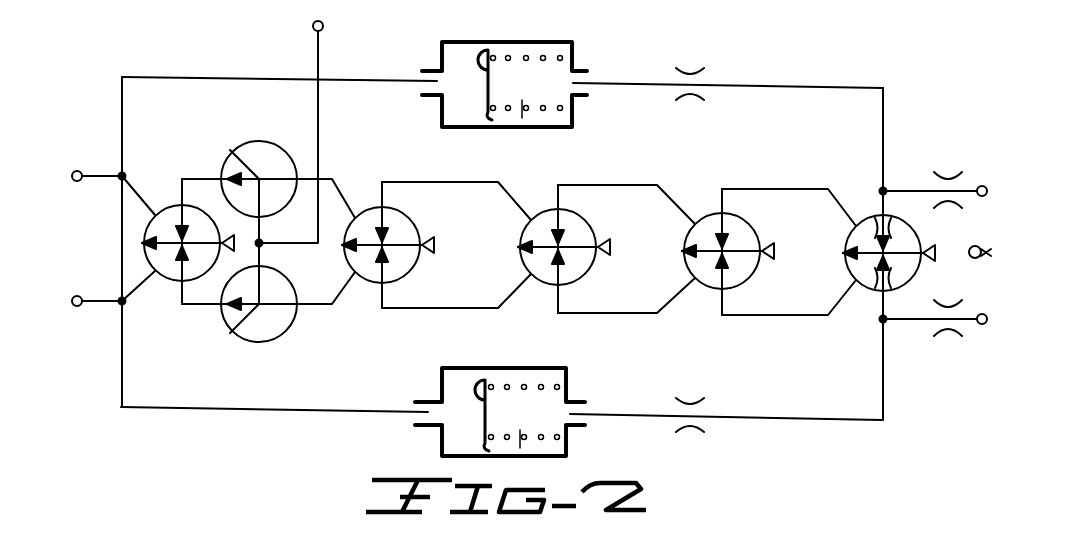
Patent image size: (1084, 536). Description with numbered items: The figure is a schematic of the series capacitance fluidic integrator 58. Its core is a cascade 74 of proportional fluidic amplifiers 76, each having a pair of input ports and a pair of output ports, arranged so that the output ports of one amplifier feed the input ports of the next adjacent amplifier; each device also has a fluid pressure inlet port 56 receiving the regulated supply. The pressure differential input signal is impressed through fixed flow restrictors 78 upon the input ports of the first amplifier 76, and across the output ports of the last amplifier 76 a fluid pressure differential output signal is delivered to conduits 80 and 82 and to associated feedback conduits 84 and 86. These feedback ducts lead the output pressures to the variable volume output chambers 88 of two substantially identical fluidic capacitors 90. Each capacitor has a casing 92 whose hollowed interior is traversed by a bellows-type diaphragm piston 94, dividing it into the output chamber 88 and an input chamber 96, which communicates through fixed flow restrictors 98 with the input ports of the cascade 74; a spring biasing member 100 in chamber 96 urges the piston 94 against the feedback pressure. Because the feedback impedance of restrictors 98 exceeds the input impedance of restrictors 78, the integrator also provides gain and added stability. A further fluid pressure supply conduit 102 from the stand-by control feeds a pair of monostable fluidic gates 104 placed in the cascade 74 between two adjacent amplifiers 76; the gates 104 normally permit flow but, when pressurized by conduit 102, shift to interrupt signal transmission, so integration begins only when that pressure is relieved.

The fluid pressure inlet ports 56 is at (434, 245).
The integrator 58 is at (800, 54).
The cascade 74 is at (710, 182).
The proportional fluidic amplifiers 76 is at (152, 262).
The fixed flow restrictors 78 is at (948, 184).
The conduit 80 is at (104, 176).
The conduit 82 is at (104, 301).
The feedback conduit 84 is at (157, 77).
The feedback conduit 86 is at (150, 409).
The variable volume output chambers 88 is at (460, 110).
The fluidic capacitors 90 is at (521, 251).
The casing 92 is at (576, 66).
The bellows-type diaphragm piston 94 is at (482, 47).
The variable volume input chambers 96 is at (522, 118).
The fixed flow restrictors 98 is at (690, 103).
The spring biasing member 100 is at (528, 52).
The fluid pressure supply conduit 102 is at (318, 58).
The monostable fluidic gates 104 is at (243, 143).